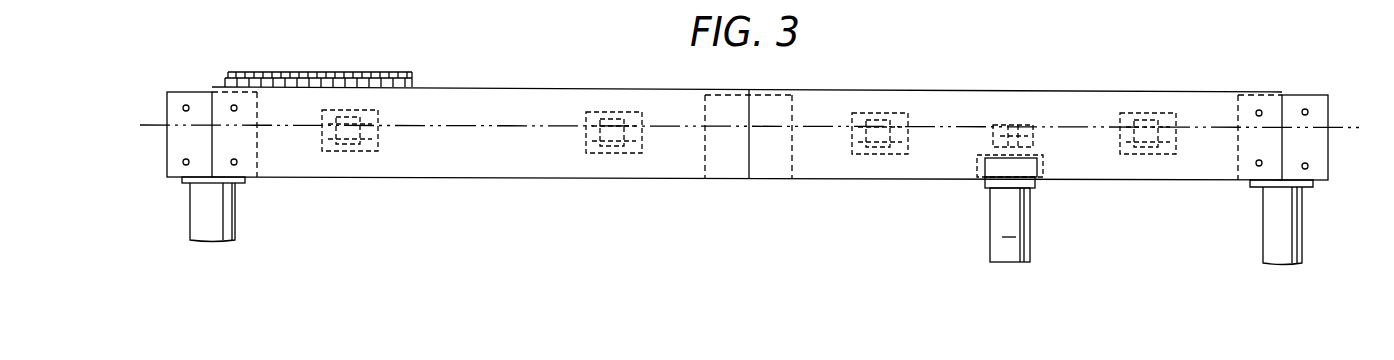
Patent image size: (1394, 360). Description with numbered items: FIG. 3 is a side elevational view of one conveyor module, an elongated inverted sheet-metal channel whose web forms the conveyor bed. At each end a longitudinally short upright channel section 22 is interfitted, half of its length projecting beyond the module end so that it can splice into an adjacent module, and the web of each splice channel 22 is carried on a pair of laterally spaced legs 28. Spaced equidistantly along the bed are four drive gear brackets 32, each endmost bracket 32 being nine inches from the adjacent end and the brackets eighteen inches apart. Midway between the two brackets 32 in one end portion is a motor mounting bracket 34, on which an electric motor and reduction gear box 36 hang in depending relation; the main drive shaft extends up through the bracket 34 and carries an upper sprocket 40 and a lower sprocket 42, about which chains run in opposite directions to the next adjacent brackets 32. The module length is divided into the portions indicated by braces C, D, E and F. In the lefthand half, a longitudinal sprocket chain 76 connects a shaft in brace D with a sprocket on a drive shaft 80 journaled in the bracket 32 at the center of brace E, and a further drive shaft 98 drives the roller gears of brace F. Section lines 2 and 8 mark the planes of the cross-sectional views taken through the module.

The section line 2- 2 is at (1378, 136).
The section line 8- 8 is at (1015, 0).
The upright channel section 22 is at (172, 152).
The legs 28 is at (213, 220).
The drive gear brackets 32 is at (326, 152).
The motor mounting bracket 34 is at (1040, 160).
The reduction gear box 36 is at (983, 186).
The upper sprocket 40 is at (1021, 124).
The lower sprocket 42 is at (1034, 140).
The longitudinal sprocket chain 76 is at (657, 0).
The drive shaft 80 is at (581, 18).
The drive shaft 98 is at (318, 0).
The brace C is at (1136, 14).
The brace D is at (887, 13).
The brace E is at (611, 14).
The brace F is at (347, 13).